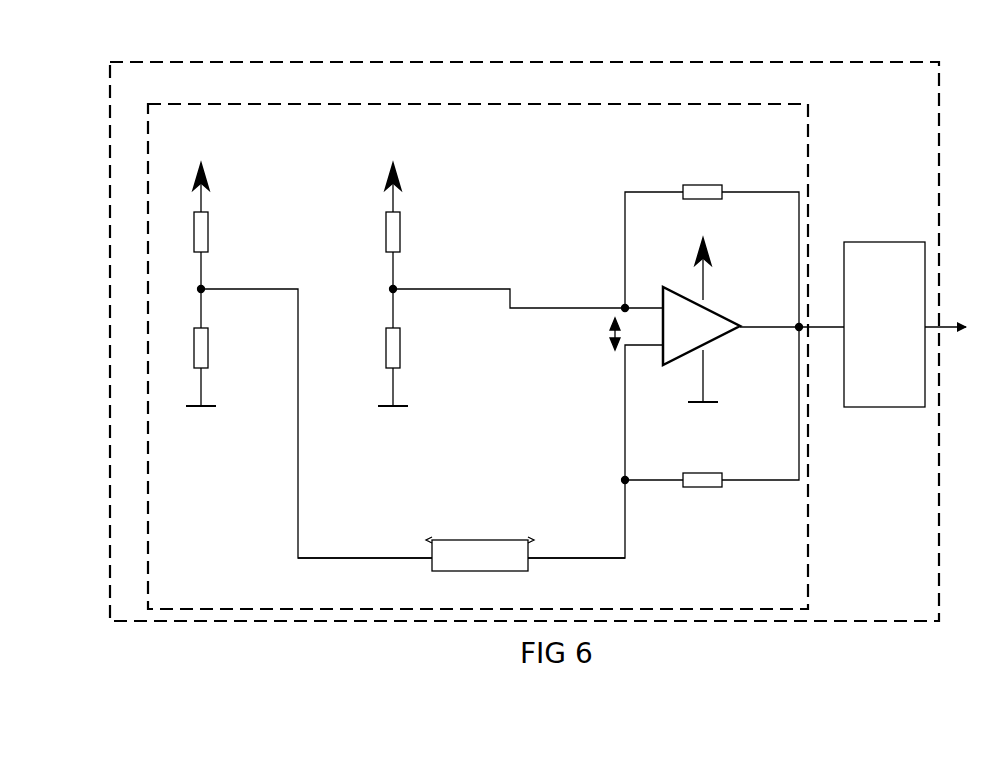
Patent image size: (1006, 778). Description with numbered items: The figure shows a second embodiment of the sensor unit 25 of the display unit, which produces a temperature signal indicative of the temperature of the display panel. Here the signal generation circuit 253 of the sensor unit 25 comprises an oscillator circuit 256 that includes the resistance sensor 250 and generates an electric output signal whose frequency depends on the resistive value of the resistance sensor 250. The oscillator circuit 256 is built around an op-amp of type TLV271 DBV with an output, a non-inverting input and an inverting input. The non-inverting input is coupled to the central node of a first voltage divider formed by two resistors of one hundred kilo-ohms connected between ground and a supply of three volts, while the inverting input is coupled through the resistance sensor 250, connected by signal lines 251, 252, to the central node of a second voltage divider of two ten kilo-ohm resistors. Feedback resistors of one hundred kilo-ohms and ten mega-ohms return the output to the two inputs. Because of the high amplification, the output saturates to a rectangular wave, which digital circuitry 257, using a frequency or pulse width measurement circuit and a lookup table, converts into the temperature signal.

The sensor unit 25 is at (308, 683).
The resistance sensor 250 is at (480, 539).
The signal line 251 is at (365, 542).
The signal line 252 is at (576, 542).
The signal generation circuit 253 is at (921, 58).
The oscillator circuit 256 is at (810, 170).
The digital circuitry 257 is at (884, 324).